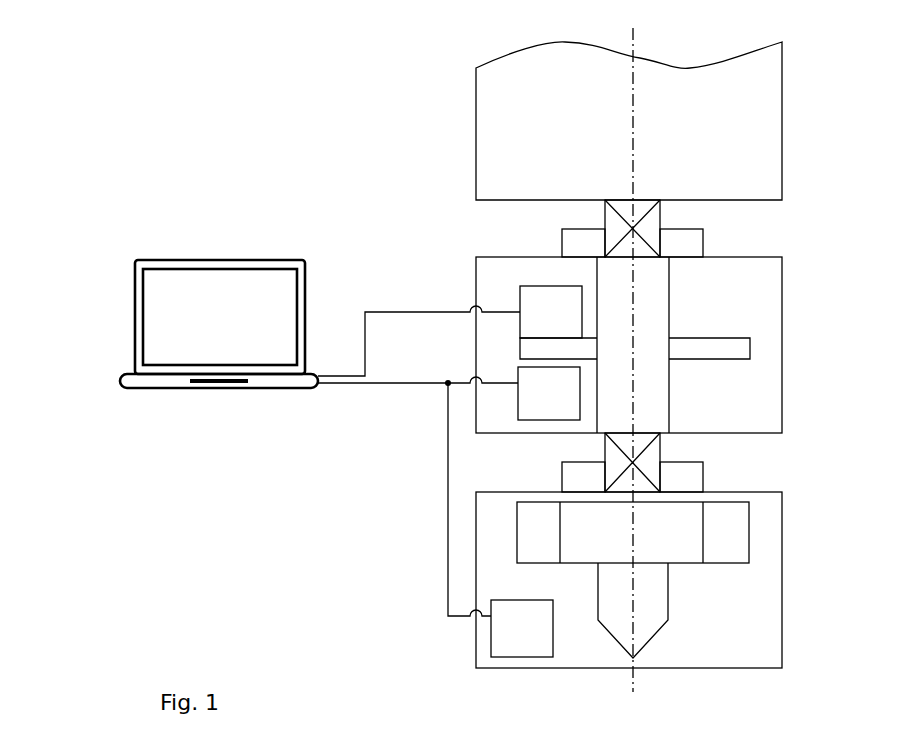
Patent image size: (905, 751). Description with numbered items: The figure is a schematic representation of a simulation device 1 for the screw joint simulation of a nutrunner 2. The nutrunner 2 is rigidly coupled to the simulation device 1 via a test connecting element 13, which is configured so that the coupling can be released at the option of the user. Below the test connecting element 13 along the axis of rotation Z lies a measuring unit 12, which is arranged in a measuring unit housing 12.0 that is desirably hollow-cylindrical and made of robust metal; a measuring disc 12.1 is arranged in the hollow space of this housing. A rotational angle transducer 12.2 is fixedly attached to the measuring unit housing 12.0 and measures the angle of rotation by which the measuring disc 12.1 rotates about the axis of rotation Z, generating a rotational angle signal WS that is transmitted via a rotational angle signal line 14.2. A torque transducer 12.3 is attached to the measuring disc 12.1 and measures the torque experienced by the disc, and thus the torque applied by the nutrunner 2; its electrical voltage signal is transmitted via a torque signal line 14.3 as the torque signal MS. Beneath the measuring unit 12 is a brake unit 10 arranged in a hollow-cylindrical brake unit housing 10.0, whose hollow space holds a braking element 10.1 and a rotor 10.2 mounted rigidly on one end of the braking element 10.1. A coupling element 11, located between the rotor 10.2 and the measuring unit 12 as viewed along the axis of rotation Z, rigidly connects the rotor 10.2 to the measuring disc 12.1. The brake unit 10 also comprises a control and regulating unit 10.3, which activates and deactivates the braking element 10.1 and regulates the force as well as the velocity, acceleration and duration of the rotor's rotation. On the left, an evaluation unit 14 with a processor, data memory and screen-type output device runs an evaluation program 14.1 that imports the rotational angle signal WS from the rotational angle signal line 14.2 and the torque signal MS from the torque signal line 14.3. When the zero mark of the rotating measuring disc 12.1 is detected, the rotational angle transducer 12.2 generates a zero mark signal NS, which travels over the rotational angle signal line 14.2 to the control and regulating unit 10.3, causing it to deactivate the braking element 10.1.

The simulation device 1 is at (146, 101).
The nutrunner 2 is at (767, 132).
The brake unit 10 is at (638, 580).
The brake unit housing 10.0 is at (680, 668).
The braking element 10.1 is at (648, 612).
The rotor 10.2 is at (724, 538).
The control and regulating unit 10.3 is at (503, 630).
The coupling element 11 is at (680, 482).
The measuring unit 12 is at (677, 345).
The measuring unit housing 12.0 is at (680, 432).
The measuring disc 12.1 is at (723, 348).
The rotational angle transducer 12.2 is at (549, 393).
The torque transducer 12.3 is at (551, 312).
The test connecting element 13 is at (688, 248).
The evaluation unit 14 is at (269, 420).
The evaluation program 14.1 is at (219, 324).
The rotational angle signal line 14.2 is at (410, 385).
The torque signal line 14.3 is at (405, 312).
The axis of rotation Z is at (634, 46).
The torque signal MS is at (351, 305).
The rotational angle signal WS is at (350, 402).
The zero mark signal NS is at (431, 572).